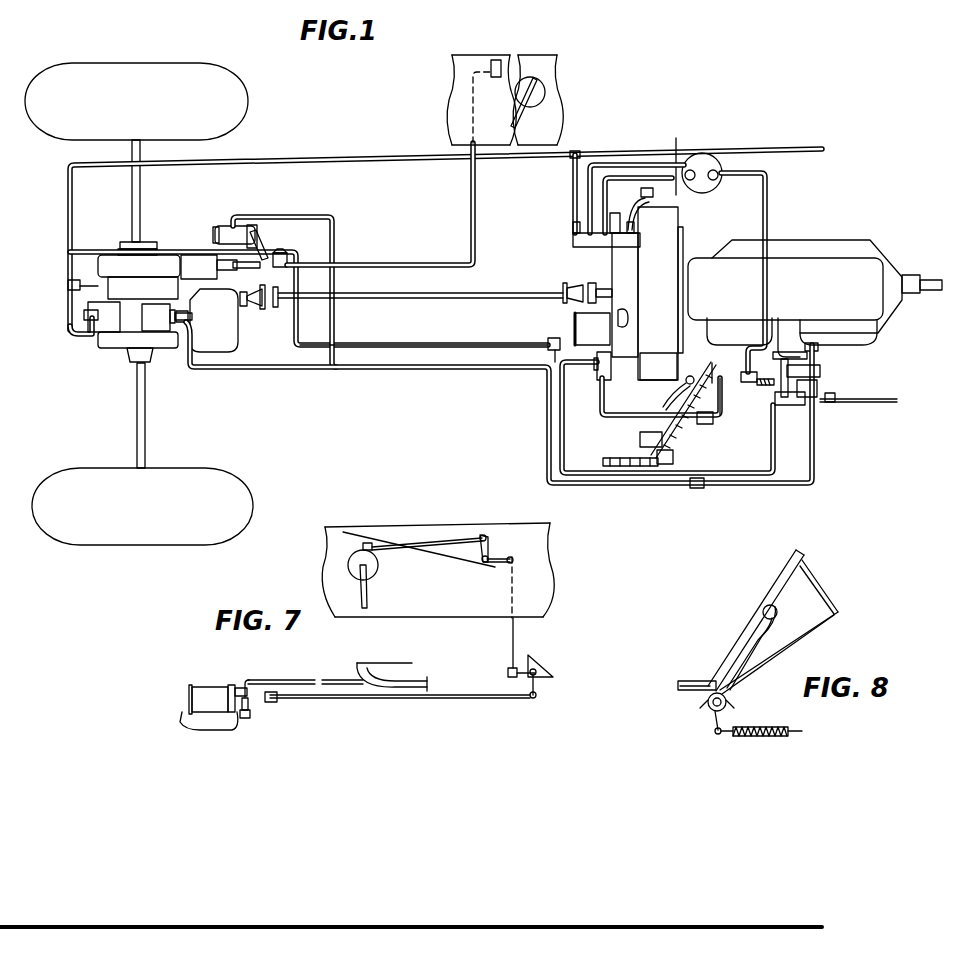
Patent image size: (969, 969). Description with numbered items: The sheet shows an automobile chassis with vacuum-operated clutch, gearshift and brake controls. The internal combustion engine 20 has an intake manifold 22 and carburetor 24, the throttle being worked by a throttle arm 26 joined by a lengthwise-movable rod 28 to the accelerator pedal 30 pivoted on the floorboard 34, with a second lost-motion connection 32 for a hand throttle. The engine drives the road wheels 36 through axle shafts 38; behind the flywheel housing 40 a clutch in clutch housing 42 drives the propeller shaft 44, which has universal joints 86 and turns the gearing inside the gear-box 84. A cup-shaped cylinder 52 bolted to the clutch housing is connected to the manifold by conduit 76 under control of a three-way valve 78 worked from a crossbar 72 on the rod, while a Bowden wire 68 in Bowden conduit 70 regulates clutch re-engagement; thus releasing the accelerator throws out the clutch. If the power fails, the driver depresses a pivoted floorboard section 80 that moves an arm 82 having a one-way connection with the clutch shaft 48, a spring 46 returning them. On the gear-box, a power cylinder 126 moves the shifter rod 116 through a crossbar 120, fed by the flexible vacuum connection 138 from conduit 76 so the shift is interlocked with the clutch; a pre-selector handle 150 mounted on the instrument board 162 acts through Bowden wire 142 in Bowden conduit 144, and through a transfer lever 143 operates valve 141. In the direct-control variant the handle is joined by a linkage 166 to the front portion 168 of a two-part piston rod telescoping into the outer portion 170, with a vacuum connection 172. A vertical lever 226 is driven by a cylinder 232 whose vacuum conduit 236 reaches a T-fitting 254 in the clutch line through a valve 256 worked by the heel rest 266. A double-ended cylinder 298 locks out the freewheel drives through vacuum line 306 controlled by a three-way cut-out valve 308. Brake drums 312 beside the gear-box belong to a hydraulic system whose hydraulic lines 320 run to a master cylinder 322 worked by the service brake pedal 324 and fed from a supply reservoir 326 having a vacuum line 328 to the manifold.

In FIG. 1, the internal combustion engine 20 is at (820, 270).
In FIG. 1, the intake manifold 22 is at (843, 333).
In FIG. 7, the intake manifold 22 is at (388, 676).
In FIG. 1, the carburetor 24 is at (800, 373).
In FIG. 1, the throttle arm 26 is at (795, 408).
In FIG. 1, the lengthwise-movable rod 28 is at (722, 402).
In FIG. 1, the accelerator pedal 30 is at (668, 402).
In FIG. 1, the second lost-motion connection 32 is at (877, 400).
In FIG. 1, the floorboard 34 is at (707, 350).
In FIG. 8, the floorboard 34 is at (787, 568).
In FIG. 1, the road wheels 36 is at (218, 95).
In FIG. 1, the axle shafts 38 is at (133, 198).
In FIG. 1, the flywheel housing 40 is at (655, 258).
In FIG. 1, the clutch housing 42 is at (630, 273).
In FIG. 1, the propeller shaft 44 is at (467, 292).
In FIG. 8, the spring 46 is at (753, 730).
In FIG. 8, the clutch shaft 48 is at (708, 703).
In FIG. 1, the cup-shaped cylinder 52 is at (592, 325).
In FIG. 1, the Bowden wire 68 is at (597, 358).
In FIG. 1, the Bowden conduit 70 is at (600, 404).
In FIG. 1, the crossbar 72 is at (712, 424).
In FIG. 1, the conduit 76 is at (557, 432).
In FIG. 1, the three-way valve 78 is at (750, 388).
In FIG. 8, the pivoted floorboard section 80 is at (757, 620).
In FIG. 1, the arm 82 is at (628, 200).
In FIG. 8, the arm 82 is at (765, 640).
In FIG. 1, the gear-box 84 is at (147, 290).
In FIG. 7, the gear-box 84 is at (207, 720).
In FIG. 1, the universal joints 86 is at (257, 302).
In FIG. 7, the shifter rod 116 is at (243, 722).
In FIG. 7, the crossbar 120 is at (252, 712).
In FIG. 1, the power cylinder 126 is at (200, 260).
In FIG. 7, the power cylinder 126 is at (205, 690).
In FIG. 1, the flexible vacuum connection 138 is at (355, 345).
In FIG. 1, the valve 141 is at (220, 235).
In FIG. 1, the Bowden wire 142 is at (275, 253).
In FIG. 1, the transfer lever 143 is at (255, 247).
In FIG. 1, the Bowden conduit 144 is at (398, 264).
In FIG. 1, the pre-selector handle 150 is at (535, 118).
In FIG. 7, the pre-selector handle 150 is at (357, 598).
In FIG. 1, the instrument panel 162 is at (552, 67).
In FIG. 7, the instrument panel 162 is at (340, 552).
In FIG. 7, the linkage 166 is at (442, 535).
In FIG. 7, the front portion of two-part piston rod 168 is at (257, 683).
In FIG. 7, the outer portion of piston rod 170 is at (236, 688).
In FIG. 7, the vacuum connection 172 is at (308, 680).
In FIG. 1, the vertical lever 226 is at (187, 316).
In FIG. 1, the cylinder 232 is at (165, 320).
In FIG. 1, the flexible vacuum conduit 236 is at (382, 367).
In FIG. 1, the T-fitting 254 is at (695, 483).
In FIG. 1, the valve 256 is at (667, 458).
In FIG. 1, the heel rest 266 is at (638, 440).
In FIG. 1, the double-ended cylinder 298 is at (87, 313).
In FIG. 1, the vacuum line 306 is at (103, 250).
In FIG. 1, the three-way cut-out valve 308 is at (817, 393).
In FIG. 1, the brake drums 312 is at (98, 265).
In FIG. 1, the hydraulic lines 320 is at (78, 293).
In FIG. 1, the master cylinder 322 is at (583, 232).
In FIG. 1, the service brake pedal 324 is at (620, 236).
In FIG. 1, the supply reservoir 326 is at (705, 160).
In FIG. 1, the vacuum line 328 is at (765, 172).